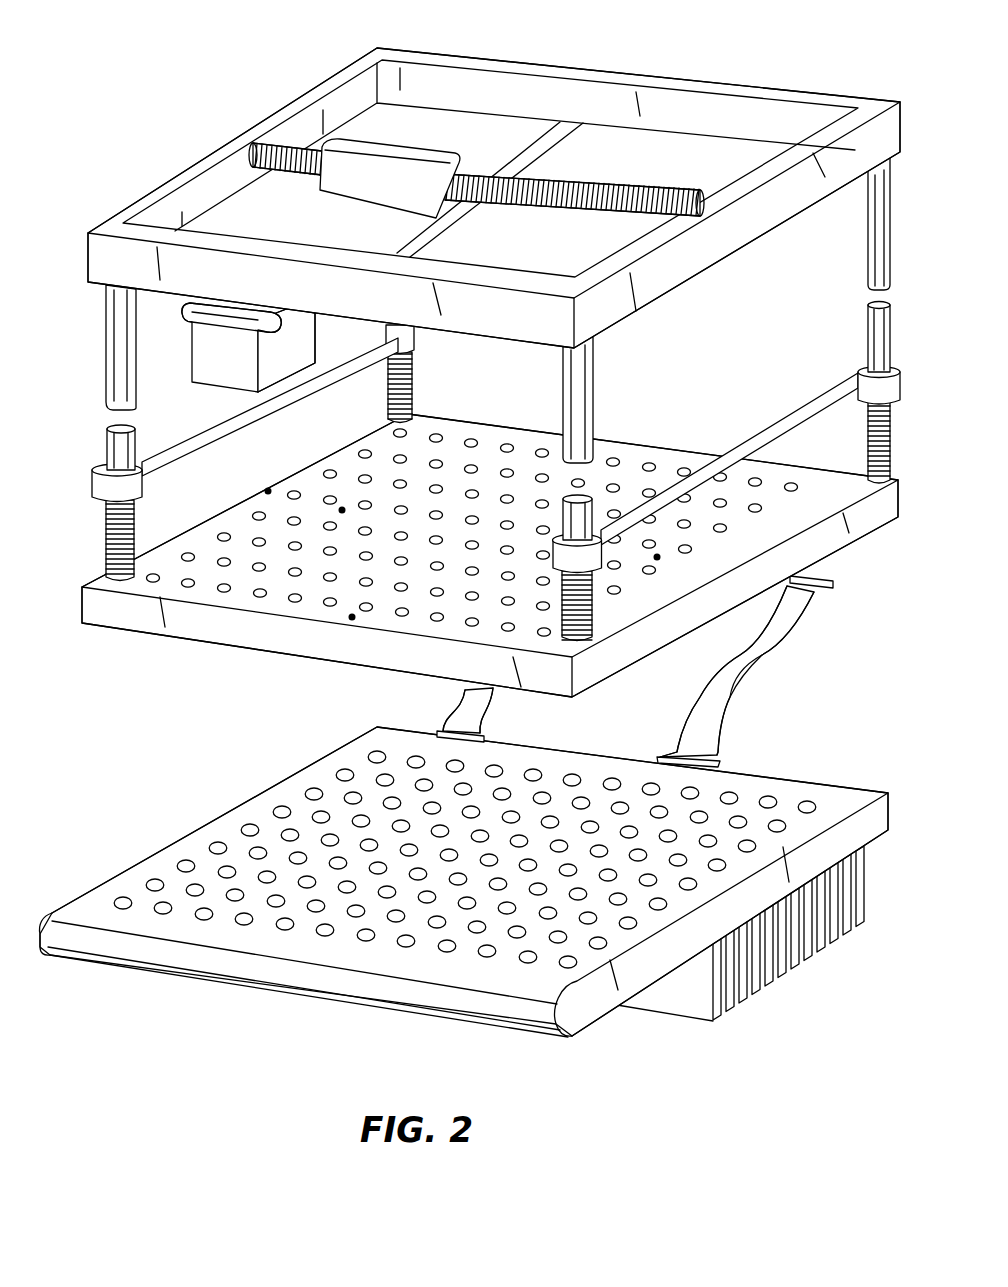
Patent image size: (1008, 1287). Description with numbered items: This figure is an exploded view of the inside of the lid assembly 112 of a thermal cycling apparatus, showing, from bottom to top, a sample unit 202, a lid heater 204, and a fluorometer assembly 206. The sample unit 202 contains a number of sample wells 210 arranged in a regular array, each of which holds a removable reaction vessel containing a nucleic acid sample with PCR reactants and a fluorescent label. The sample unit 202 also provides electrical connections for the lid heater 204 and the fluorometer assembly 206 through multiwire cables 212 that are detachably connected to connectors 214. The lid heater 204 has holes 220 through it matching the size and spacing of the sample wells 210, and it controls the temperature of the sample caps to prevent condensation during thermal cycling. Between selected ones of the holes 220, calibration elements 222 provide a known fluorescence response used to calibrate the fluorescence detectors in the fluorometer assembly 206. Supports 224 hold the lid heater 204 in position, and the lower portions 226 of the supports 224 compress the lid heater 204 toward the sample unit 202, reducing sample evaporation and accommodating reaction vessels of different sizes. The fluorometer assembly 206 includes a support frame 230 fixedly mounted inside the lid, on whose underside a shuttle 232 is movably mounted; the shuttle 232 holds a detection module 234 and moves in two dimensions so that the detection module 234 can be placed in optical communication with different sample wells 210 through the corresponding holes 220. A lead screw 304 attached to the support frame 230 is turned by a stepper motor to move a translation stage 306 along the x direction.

The lid assembly 112 is at (461, 536).
The sample unit 202 is at (464, 887).
The lid heater 204 is at (490, 559).
The fluorometer assembly 206 is at (461, 224).
The sample wells 210 is at (287, 932).
The multiwire cables 212 is at (613, 671).
The connectors 214 is at (450, 732).
The holes 220 is at (296, 603).
The calibration elements 222 is at (342, 507).
The supports 224 is at (133, 430).
The lower portions 226 is at (866, 458).
The support frame 230 is at (494, 198).
The shuttle 232 is at (189, 301).
The detection module 234 is at (250, 367).
The lead screw 304 is at (592, 178).
The translation stage 306 is at (417, 223).